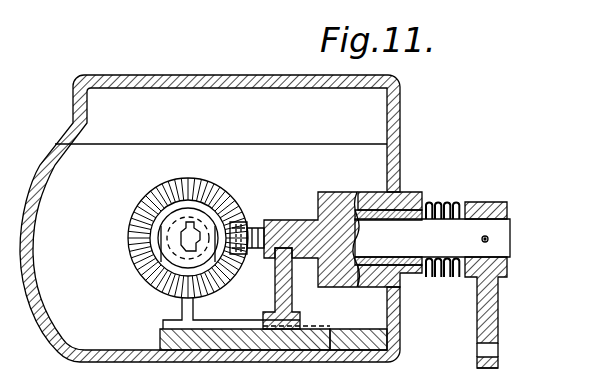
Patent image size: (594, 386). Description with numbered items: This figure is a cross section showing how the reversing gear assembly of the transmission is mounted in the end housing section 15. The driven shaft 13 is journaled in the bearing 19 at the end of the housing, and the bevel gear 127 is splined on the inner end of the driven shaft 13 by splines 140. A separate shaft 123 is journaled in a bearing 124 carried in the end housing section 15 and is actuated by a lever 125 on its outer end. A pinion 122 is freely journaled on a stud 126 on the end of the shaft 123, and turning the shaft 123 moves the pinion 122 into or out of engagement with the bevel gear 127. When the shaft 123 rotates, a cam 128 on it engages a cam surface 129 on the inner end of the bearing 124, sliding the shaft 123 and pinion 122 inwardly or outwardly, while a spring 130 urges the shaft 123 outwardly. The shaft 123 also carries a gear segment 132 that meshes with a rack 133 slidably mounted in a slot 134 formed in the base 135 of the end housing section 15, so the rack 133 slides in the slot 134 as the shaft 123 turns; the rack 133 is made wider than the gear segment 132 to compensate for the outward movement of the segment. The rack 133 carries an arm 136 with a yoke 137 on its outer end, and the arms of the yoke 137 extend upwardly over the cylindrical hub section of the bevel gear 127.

The driven shaft 13 is at (192, 228).
The end housing section 15 is at (107, 362).
The bearing 19 is at (490, 385).
The pinion 122 is at (238, 194).
The shaft 123 is at (506, 238).
The bearing 124 is at (415, 203).
The lever 125 is at (490, 313).
The stud 126 is at (258, 258).
The bevel gear 127 is at (150, 288).
The cam 128 is at (320, 191).
The cam surface 129 is at (357, 194).
The spring 130 is at (452, 204).
The gear segment 132 is at (288, 298).
The rack 133 is at (327, 327).
The slot 134 is at (328, 352).
The base 135 is at (207, 353).
The arm 136 is at (180, 322).
The yoke 137 is at (150, 242).
The splines 140 is at (150, 197).